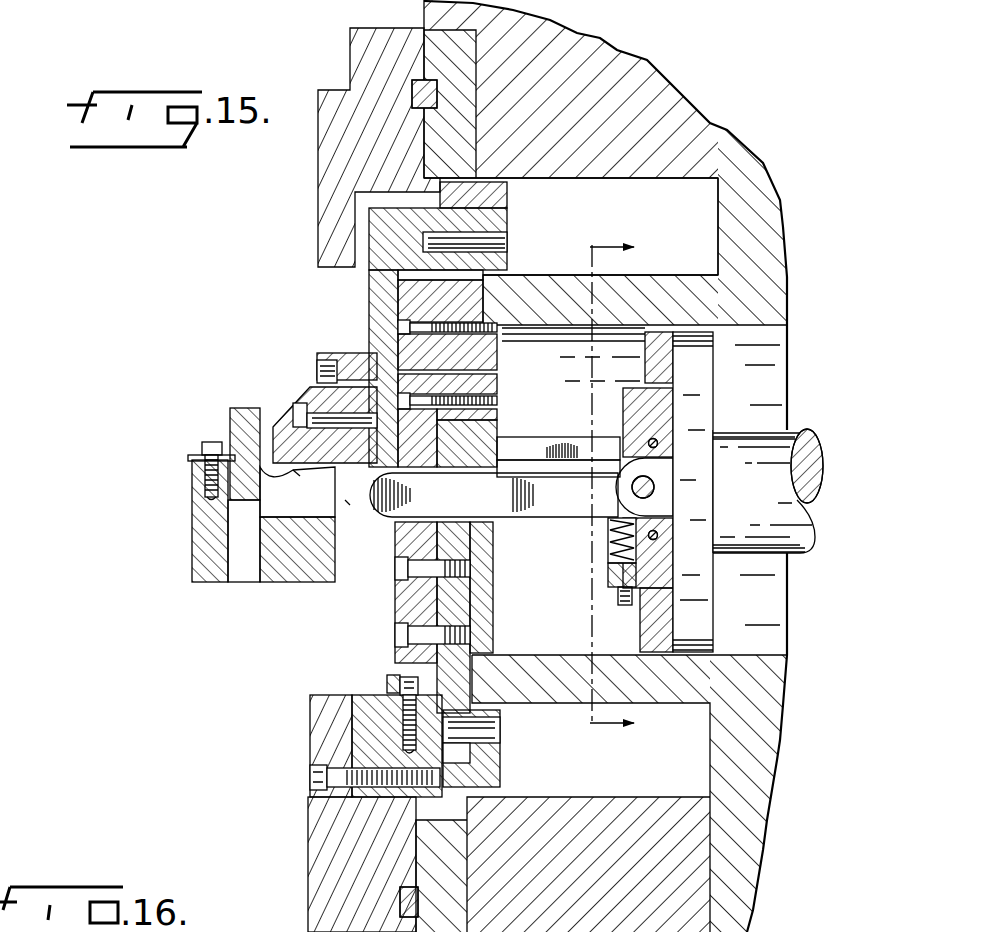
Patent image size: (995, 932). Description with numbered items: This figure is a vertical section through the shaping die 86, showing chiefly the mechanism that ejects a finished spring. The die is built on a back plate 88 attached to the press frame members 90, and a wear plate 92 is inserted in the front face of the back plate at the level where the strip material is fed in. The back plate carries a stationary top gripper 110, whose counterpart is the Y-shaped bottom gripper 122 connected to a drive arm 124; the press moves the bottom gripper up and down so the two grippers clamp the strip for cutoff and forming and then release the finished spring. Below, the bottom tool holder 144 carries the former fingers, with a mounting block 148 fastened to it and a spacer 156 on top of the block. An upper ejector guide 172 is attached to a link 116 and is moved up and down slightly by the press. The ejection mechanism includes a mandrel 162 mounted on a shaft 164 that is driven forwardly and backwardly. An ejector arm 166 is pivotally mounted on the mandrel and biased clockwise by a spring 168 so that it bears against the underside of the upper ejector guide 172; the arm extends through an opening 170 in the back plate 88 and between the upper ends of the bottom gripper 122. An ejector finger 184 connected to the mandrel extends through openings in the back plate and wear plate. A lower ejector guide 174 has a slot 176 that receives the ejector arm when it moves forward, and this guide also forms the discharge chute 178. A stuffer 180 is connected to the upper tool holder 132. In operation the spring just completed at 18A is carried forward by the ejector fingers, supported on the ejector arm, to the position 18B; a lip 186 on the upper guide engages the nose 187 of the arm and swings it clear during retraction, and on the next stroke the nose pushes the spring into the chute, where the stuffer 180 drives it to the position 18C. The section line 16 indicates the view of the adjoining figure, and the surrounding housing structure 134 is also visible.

The housing 134 is at (655, 82).
The upper tool holder 132 is at (333, 172).
The press frame members 90 is at (692, 264).
The link 116 is at (366, 276).
The stationary top gripper 110 is at (407, 300).
The wear plate 92 is at (462, 455).
The back plate 88 is at (500, 360).
The ejector finger 184 is at (593, 442).
The ejector arm 166 is at (540, 500).
The spring 18A is at (426, 478).
The mandrel 162 is at (715, 585).
The shaft 164 is at (819, 452).
The spring 168 is at (612, 547).
The opening 170 is at (527, 528).
The Y-shaped bottom gripper 122 is at (400, 607).
The upper ejector guide 172 is at (327, 390).
The shaping die 86 is at (303, 343).
The stuffer 180 is at (248, 405).
The lip 186 is at (232, 458).
The discharge chute 178 is at (248, 574).
The spring 18C is at (240, 478).
The lower ejector guide 174 is at (315, 572).
The slot 176 is at (330, 537).
The spring 18B is at (300, 469).
The nose 187 is at (352, 487).
The mounting block 148 is at (367, 690).
The spacer 156 is at (396, 690).
The bottom tool holder 144 is at (322, 851).
The drive arm 124 is at (502, 768).
The section line 16- 16 is at (585, 490).